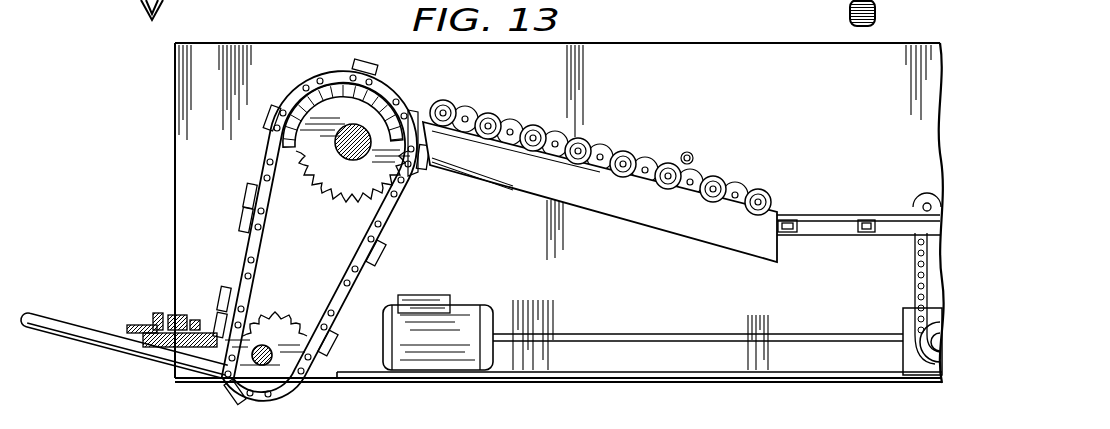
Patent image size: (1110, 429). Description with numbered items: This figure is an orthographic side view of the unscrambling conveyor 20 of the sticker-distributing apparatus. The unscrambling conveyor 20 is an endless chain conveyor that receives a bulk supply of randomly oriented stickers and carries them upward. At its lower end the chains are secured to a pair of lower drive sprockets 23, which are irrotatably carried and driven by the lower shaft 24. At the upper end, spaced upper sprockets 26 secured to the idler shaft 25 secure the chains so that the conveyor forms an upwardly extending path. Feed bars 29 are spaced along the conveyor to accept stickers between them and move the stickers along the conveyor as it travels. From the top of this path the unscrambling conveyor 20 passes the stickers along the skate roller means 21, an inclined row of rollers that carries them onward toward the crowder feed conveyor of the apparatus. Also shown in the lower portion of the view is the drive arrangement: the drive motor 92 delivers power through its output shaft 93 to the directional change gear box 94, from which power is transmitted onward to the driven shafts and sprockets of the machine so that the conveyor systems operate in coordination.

The unscrambling conveyor 20 is at (270, 166).
The skate roller means 21 is at (543, 120).
The lower drive sprockets 23 is at (257, 328).
The lower shaft 24 is at (276, 344).
The idler shaft 25 is at (360, 158).
The upper sprockets 26 is at (363, 182).
The feed bars 29 is at (275, 108).
The drive motor 92 is at (458, 330).
The output shaft 93 is at (709, 334).
The directional change gear box 94 is at (910, 332).